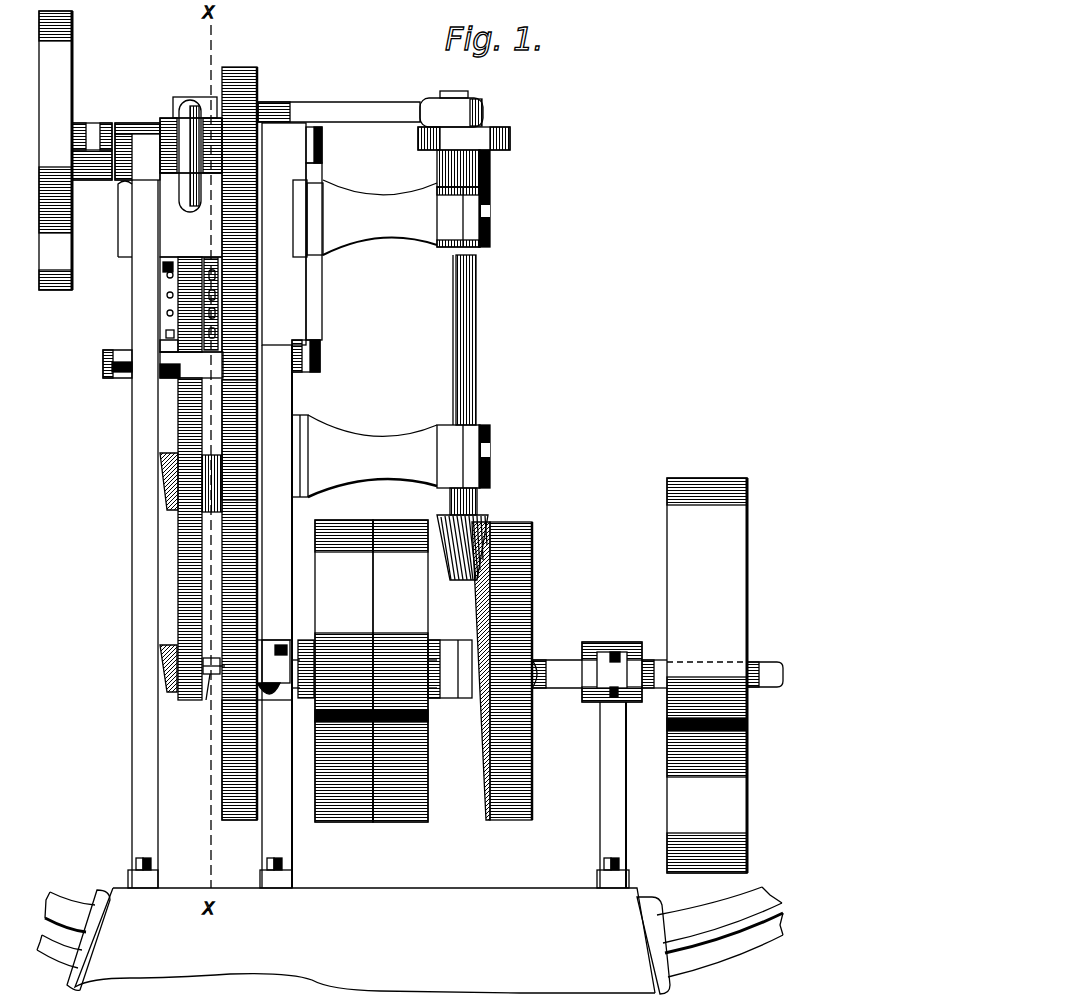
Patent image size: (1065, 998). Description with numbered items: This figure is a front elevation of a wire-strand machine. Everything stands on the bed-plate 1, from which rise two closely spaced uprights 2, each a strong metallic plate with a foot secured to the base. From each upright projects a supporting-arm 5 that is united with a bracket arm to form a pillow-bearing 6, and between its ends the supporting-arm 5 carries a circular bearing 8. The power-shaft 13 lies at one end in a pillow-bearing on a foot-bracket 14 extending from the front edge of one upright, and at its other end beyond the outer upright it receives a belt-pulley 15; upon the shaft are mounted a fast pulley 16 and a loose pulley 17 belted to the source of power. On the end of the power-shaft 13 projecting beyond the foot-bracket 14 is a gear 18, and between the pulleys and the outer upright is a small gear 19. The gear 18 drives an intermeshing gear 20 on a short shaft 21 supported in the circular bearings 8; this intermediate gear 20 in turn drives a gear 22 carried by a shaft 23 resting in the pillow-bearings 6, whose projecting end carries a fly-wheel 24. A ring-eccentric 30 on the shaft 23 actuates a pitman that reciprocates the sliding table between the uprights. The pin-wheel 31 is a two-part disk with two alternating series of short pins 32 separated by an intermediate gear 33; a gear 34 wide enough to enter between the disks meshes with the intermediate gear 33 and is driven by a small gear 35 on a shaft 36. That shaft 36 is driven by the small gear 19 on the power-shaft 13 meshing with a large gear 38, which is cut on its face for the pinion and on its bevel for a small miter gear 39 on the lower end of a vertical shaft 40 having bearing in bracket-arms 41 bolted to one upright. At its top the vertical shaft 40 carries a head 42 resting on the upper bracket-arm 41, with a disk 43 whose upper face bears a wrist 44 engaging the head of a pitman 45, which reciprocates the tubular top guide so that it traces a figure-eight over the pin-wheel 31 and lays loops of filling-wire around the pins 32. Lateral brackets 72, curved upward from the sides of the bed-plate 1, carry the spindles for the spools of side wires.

The bed-plate 1 is at (365, 940).
The uprights 2 is at (133, 570).
The supporting-arm 5 is at (140, 290).
The pillow-bearing 6 is at (128, 128).
The circular bearing 8 is at (118, 384).
The power-shaft 13 is at (566, 690).
The foot-bracket 14 is at (275, 828).
The belt-pulley 15 is at (707, 675).
The fast pulley 16 is at (344, 671).
The loose pulley 17 is at (400, 671).
The gear 18 is at (228, 742).
The small gear 19 is at (520, 656).
The intermeshing gear 20 is at (240, 433).
The short shaft 21 is at (177, 379).
The gear 22 is at (260, 92).
The shaft 23 is at (323, 158).
The fly-wheel 24 is at (68, 100).
The ring-eccentric 30 is at (190, 204).
The pin-wheel 31 is at (165, 336).
The short pins 32 is at (190, 268).
The intermediate gear 33 is at (176, 312).
The gear 34 is at (178, 600).
The small gear 35 is at (160, 692).
The shaft 36 is at (200, 696).
The large gear 38 is at (522, 588).
The bevel or miter gear 39 is at (470, 532).
The vertical shaft 40 is at (478, 396).
The bracket-arms 41 is at (364, 338).
The head 42 is at (492, 180).
The disk 43 is at (498, 130).
The wrist 44 is at (470, 94).
The pitman 45 is at (366, 112).
The lateral brackets 72 is at (70, 905).